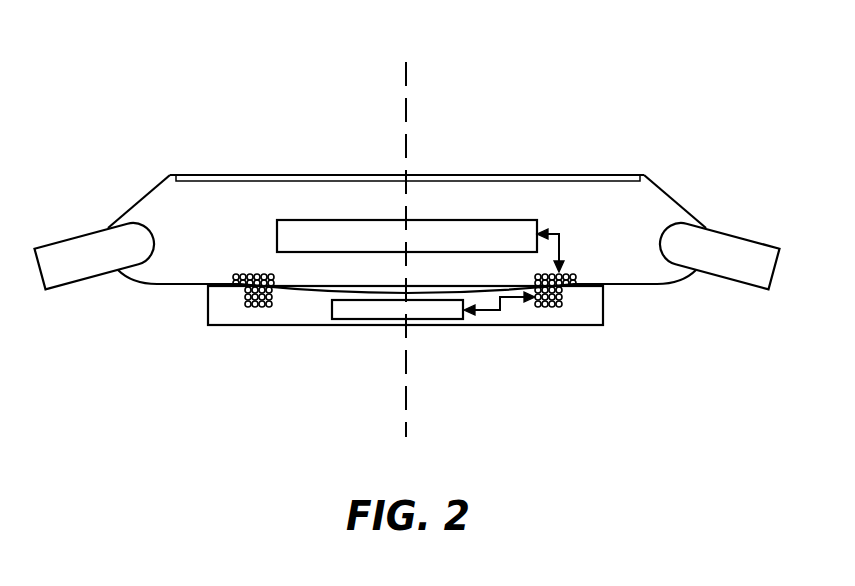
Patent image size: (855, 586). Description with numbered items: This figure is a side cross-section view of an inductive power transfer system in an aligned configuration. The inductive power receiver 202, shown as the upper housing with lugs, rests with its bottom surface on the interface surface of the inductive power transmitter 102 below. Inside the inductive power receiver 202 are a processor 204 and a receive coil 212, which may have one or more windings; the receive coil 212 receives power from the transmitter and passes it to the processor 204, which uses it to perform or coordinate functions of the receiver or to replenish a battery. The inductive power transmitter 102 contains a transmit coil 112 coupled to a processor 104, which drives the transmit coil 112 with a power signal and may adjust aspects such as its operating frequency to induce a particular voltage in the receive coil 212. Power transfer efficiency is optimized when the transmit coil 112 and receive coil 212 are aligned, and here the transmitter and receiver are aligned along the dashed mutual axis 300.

The mutual axis 300 is at (408, 62).
The inductive power receiver 202 is at (138, 203).
The processor 204 is at (277, 226).
The receive coil 212 is at (270, 274).
The inductive power transmitter 102 is at (604, 326).
The transmit coil 112 is at (276, 305).
The processor 104 is at (405, 320).